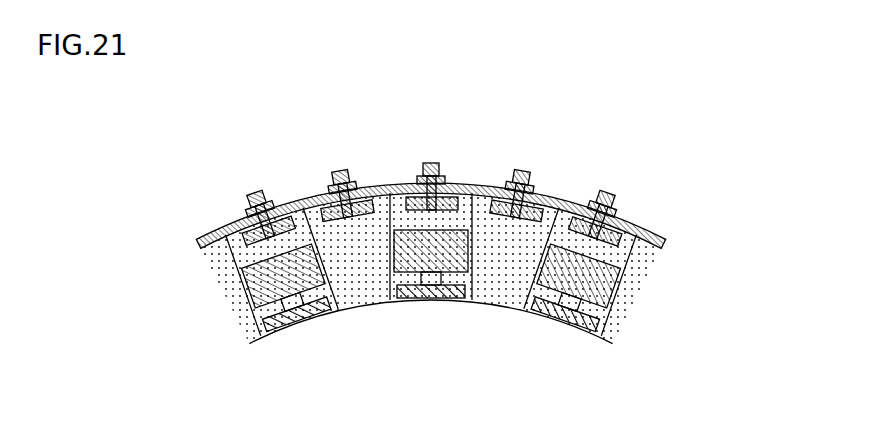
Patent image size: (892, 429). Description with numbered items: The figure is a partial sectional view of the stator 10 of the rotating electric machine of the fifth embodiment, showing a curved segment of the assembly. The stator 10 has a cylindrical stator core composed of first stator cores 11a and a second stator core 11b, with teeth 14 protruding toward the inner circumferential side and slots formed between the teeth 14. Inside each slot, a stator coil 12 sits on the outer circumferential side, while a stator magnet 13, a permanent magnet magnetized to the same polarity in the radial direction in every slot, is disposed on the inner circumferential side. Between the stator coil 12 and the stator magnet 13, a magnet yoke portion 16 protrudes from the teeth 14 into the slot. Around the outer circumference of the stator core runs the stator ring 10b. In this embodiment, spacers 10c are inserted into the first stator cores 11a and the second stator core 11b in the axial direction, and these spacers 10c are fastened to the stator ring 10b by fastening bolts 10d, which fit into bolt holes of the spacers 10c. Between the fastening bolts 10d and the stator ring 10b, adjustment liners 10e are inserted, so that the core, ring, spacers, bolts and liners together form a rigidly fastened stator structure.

The stator 10 is at (156, 147).
The stator ring 10b is at (630, 221).
The spacer 10c is at (373, 184).
The fastening bolt 10d is at (338, 172).
The adjustment liner 10e is at (357, 180).
The first stator core 11a is at (470, 178).
The second stator core 11b is at (312, 190).
The stator coil 12 is at (423, 297).
The stator magnet 13 is at (450, 290).
The tooth 14 is at (352, 290).
The magnet yoke portion 16 is at (390, 288).